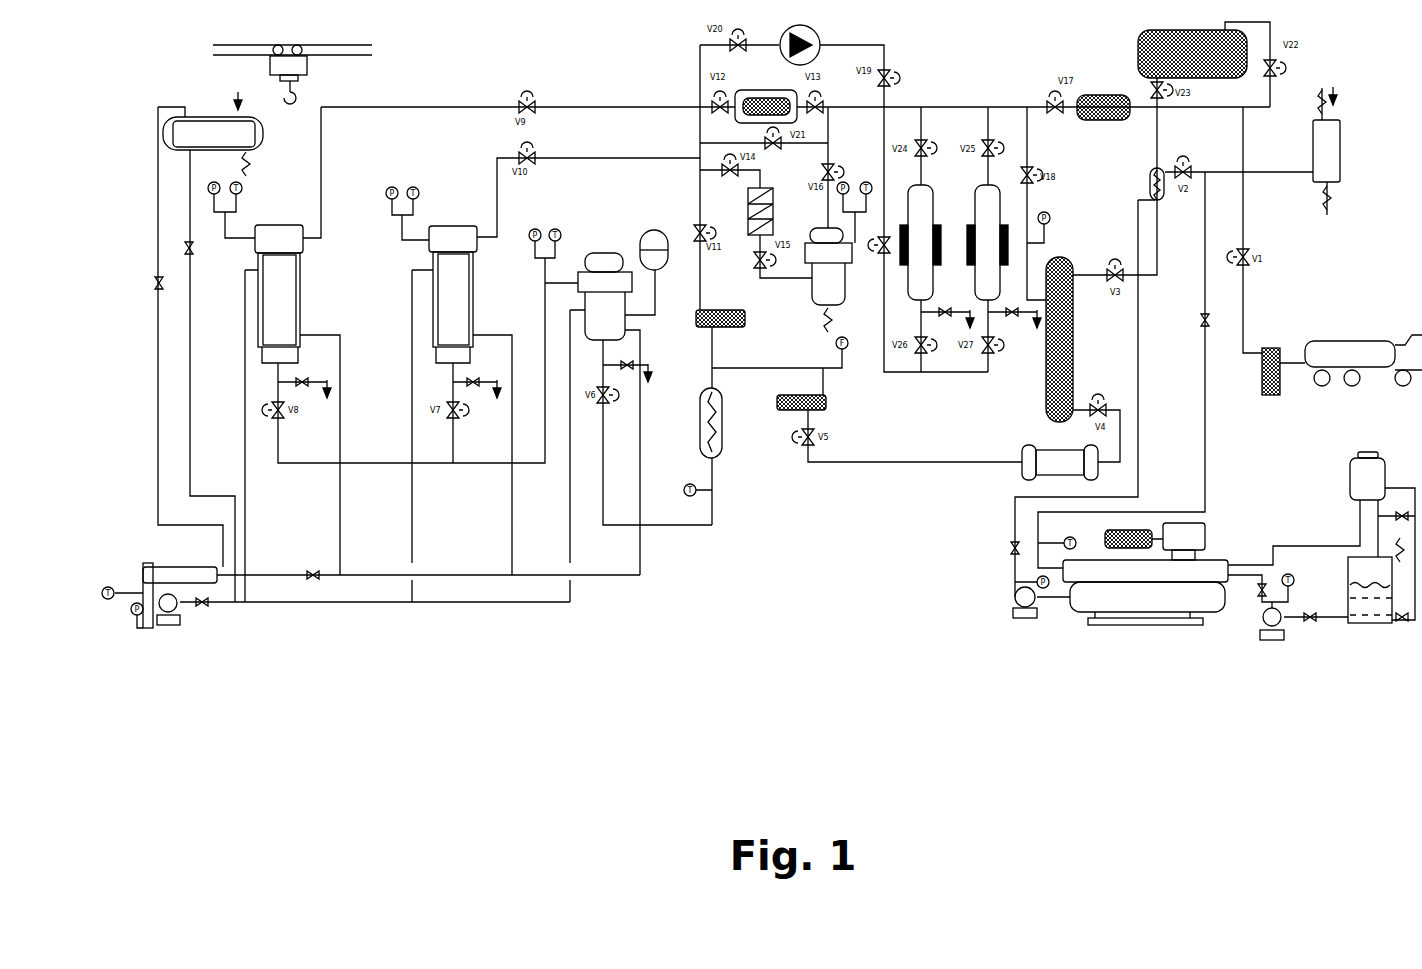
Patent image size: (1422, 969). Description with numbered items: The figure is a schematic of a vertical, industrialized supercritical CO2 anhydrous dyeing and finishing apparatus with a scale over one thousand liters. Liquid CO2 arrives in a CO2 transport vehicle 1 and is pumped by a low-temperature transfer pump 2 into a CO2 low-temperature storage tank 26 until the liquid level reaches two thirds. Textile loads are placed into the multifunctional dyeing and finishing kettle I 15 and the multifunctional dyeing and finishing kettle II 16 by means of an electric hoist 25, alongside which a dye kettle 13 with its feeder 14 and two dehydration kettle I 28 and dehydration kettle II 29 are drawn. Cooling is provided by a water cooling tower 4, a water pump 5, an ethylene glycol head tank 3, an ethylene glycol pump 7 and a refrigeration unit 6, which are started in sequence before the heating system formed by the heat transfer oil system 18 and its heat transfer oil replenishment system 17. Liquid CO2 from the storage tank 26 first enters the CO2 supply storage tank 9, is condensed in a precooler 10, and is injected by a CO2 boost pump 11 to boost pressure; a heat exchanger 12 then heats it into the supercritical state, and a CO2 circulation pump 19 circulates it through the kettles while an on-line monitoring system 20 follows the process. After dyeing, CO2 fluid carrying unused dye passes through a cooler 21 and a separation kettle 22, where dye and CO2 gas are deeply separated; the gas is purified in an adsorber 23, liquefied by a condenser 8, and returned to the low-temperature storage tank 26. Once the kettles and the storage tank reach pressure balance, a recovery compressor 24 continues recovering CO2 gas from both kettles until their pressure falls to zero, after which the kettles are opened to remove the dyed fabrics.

The CO2 transport vehicle 1 is at (1363, 360).
The low-temperature transfer pump 2 is at (1271, 360).
The ethylene glycol head tank 3 is at (1326, 151).
The water cooling tower 4 is at (1354, 537).
The water pump 5 is at (1262, 624).
The refrigeration unit 6 is at (1145, 574).
The ethylene glycol pump 7 is at (1033, 610).
The condenser 8 is at (1148, 184).
The CO2 supply storage tank 9 is at (1059, 339).
The precooler 10 is at (1060, 462).
The CO2 boost pump 11 is at (816, 401).
The heat exchanger 12 is at (726, 423).
The dye kettle 13 is at (605, 296).
The feeder 14 is at (654, 235).
The multifunctional dyeing and finishing kettle I 15 is at (453, 294).
The multifunctional dyeing and finishing kettle II 16 is at (279, 294).
The heat transfer oil replenishment system 17 is at (213, 133).
The heat transfer oil system 18 is at (180, 584).
The CO2 circulation pump 19 is at (720, 306).
The on-line monitoring system 20 is at (766, 93).
The cooler 21 is at (743, 211).
The separation kettle 22 is at (828, 266).
The adsorber 23 is at (1103, 119).
The recovery compressor 24 is at (816, 43).
The electric hoist 25 is at (292, 74).
The CO2 low-temperature storage tank 26 is at (1192, 54).
The dehydration kettle I 28 is at (920, 242).
The dehydration kettle II 29 is at (987, 242).